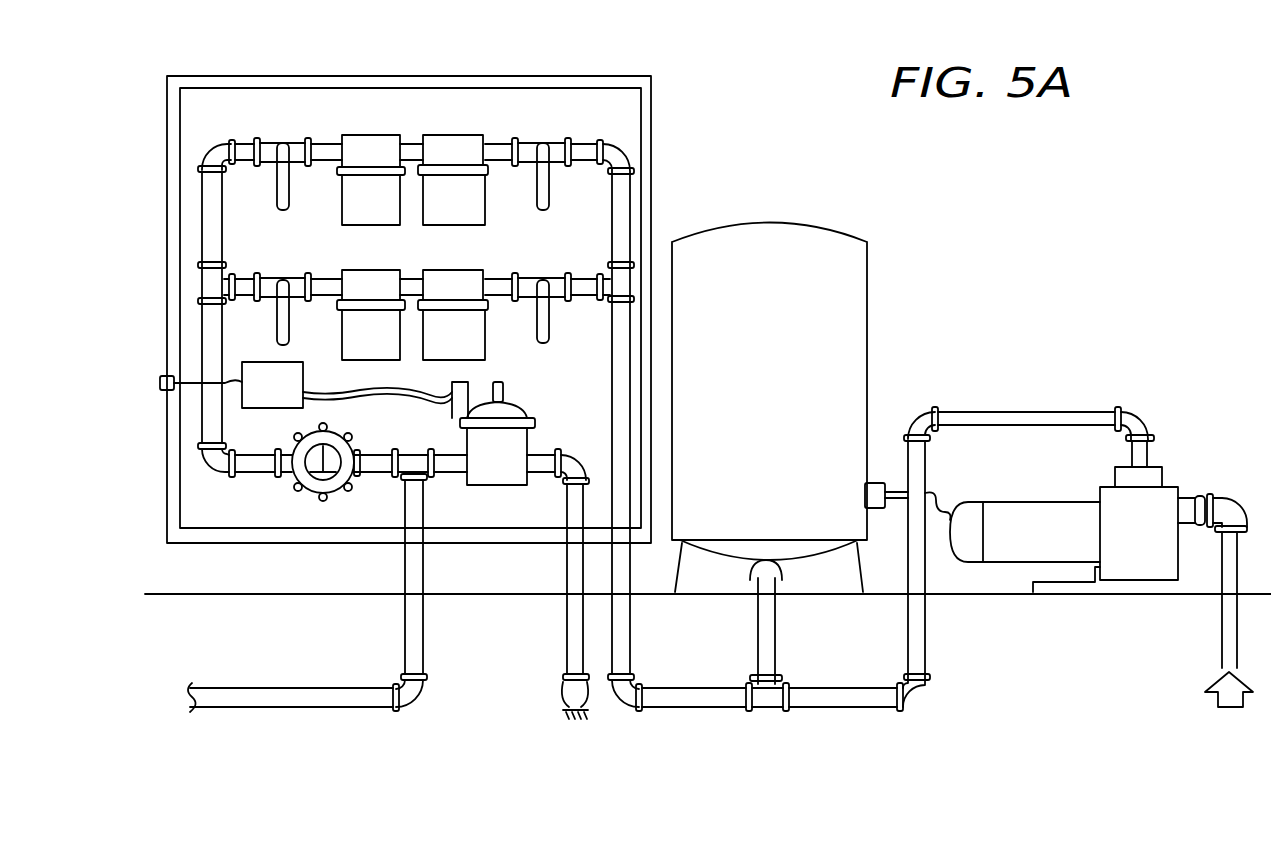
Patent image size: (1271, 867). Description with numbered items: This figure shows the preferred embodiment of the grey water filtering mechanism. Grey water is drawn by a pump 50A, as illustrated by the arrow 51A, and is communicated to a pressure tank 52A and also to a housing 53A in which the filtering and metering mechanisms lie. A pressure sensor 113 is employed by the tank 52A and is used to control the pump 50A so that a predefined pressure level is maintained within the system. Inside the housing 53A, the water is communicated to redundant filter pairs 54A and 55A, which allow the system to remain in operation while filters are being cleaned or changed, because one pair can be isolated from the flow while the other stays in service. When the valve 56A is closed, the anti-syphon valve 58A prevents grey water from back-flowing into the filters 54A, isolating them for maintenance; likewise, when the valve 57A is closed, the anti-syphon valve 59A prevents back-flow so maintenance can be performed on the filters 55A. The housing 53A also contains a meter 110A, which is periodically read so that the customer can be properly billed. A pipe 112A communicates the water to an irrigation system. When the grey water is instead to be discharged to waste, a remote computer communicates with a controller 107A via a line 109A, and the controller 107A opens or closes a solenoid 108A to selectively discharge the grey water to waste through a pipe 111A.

The pump 50A is at (1068, 550).
The arrow 51A is at (1204, 707).
The pressure tank 52A is at (808, 473).
The housing 53A is at (653, 130).
The filter pair 54A is at (480, 133).
The filter pair 55A is at (478, 268).
The valve 56A is at (543, 140).
The valve 57A is at (543, 280).
The anti-syphon valve 58A is at (283, 138).
The anti-syphon valve 59A is at (305, 232).
The controller 107A is at (305, 384).
The solenoid 108A is at (516, 404).
The line 109A is at (160, 380).
The meter 110A is at (296, 490).
The pipe 111A is at (565, 562).
The pipe 112A is at (403, 645).
The pressure sensor 113 is at (884, 483).